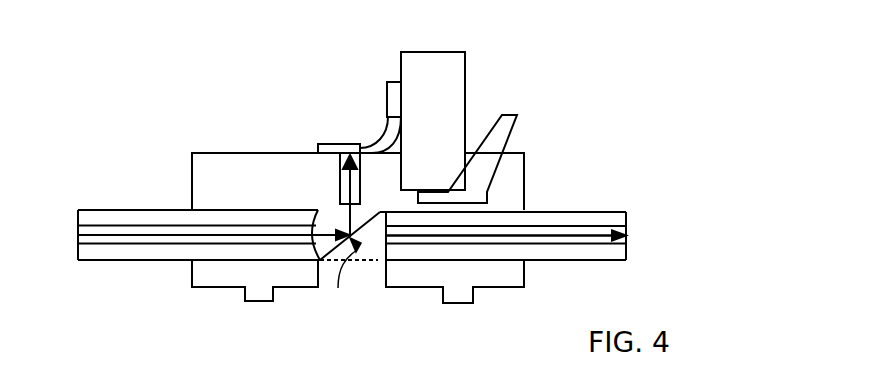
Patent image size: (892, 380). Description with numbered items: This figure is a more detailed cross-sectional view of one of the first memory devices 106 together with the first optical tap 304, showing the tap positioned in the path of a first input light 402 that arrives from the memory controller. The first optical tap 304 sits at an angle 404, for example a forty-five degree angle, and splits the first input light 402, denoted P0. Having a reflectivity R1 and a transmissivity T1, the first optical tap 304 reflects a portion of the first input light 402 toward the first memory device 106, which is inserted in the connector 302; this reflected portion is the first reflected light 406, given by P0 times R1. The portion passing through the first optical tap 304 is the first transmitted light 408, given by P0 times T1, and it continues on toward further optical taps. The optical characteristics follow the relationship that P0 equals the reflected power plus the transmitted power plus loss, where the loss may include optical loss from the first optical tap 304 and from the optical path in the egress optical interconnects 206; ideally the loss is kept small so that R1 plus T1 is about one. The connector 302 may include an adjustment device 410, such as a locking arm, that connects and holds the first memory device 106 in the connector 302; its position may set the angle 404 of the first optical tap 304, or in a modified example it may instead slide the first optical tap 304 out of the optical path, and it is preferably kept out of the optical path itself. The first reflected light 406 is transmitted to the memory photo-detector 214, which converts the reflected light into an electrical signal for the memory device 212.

The first memory device 106 is at (457, 123).
The egress optical interconnects 206 is at (140, 224).
The memory device 212 is at (393, 87).
The memory photo-detector 214 is at (330, 147).
The connector 302 is at (198, 188).
The first optical tap 304 is at (368, 222).
The first input light 402 is at (320, 260).
The angle 404 is at (341, 298).
The first reflected light 406 is at (347, 220).
The first transmitted light 408 is at (543, 235).
The adjustment device 410 is at (503, 137).